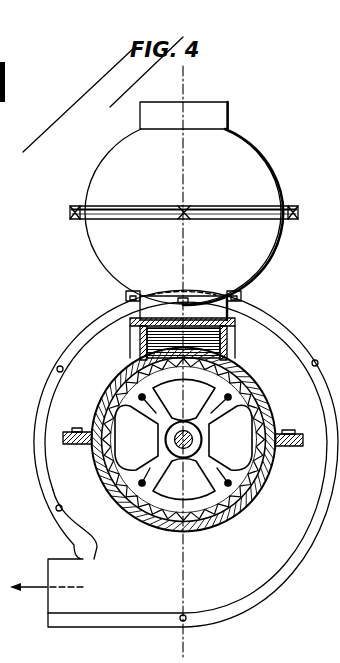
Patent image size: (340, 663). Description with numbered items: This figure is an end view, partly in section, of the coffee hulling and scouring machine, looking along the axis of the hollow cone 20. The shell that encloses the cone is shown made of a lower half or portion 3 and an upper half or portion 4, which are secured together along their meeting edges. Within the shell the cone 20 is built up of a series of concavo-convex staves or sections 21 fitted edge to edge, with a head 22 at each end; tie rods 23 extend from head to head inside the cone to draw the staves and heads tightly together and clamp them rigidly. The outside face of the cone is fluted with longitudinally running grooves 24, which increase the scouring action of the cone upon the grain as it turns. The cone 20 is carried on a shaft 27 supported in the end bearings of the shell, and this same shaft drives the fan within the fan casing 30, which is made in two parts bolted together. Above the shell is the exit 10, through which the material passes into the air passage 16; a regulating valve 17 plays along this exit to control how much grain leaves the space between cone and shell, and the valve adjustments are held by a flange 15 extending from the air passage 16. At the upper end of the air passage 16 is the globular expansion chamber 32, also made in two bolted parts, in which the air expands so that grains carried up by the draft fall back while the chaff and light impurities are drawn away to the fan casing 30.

The lower half or portion of the shell 3 is at (179, 363).
The upper half or portion of the shell 4 is at (268, 402).
The exit 10 is at (182, 337).
The flange 15 is at (266, 303).
The air passage 16 is at (195, 309).
The regulating valve 17 is at (182, 343).
The cone 20 is at (184, 439).
The staves or sections 21 is at (178, 428).
The head 22 is at (193, 428).
The tie rods 23 is at (183, 440).
The longitudinally running grooves 24 is at (120, 372).
The shaft 27 is at (153, 428).
The fan casing 30 is at (276, 583).
The expansion chamber 32 is at (184, 203).